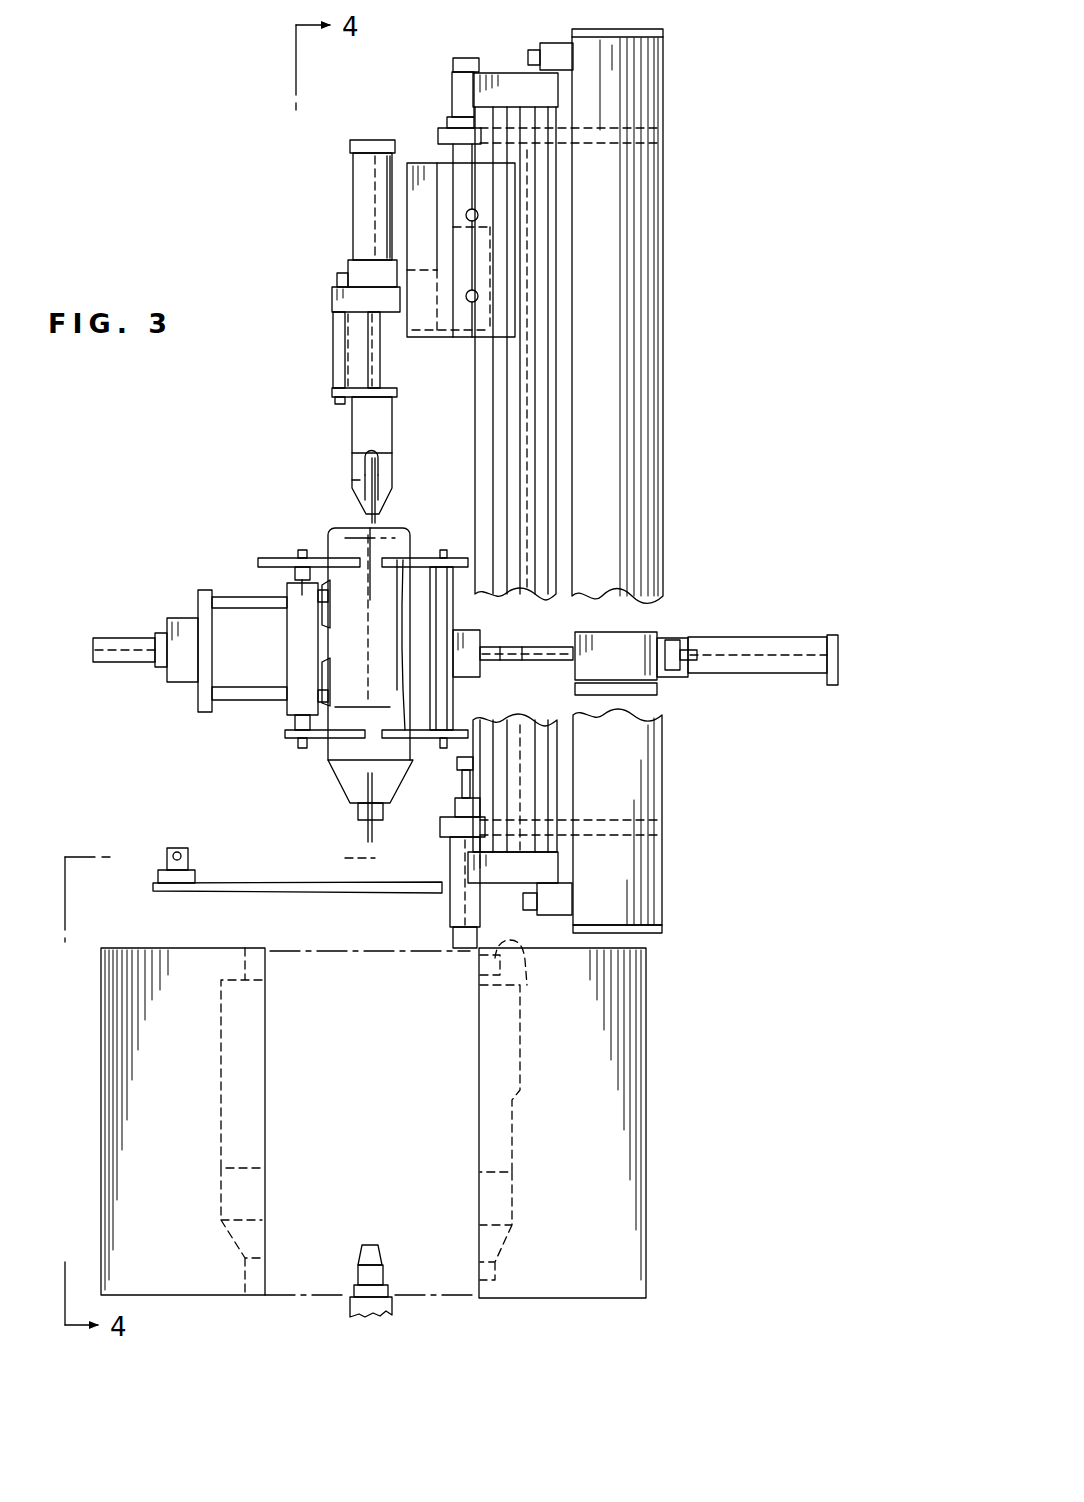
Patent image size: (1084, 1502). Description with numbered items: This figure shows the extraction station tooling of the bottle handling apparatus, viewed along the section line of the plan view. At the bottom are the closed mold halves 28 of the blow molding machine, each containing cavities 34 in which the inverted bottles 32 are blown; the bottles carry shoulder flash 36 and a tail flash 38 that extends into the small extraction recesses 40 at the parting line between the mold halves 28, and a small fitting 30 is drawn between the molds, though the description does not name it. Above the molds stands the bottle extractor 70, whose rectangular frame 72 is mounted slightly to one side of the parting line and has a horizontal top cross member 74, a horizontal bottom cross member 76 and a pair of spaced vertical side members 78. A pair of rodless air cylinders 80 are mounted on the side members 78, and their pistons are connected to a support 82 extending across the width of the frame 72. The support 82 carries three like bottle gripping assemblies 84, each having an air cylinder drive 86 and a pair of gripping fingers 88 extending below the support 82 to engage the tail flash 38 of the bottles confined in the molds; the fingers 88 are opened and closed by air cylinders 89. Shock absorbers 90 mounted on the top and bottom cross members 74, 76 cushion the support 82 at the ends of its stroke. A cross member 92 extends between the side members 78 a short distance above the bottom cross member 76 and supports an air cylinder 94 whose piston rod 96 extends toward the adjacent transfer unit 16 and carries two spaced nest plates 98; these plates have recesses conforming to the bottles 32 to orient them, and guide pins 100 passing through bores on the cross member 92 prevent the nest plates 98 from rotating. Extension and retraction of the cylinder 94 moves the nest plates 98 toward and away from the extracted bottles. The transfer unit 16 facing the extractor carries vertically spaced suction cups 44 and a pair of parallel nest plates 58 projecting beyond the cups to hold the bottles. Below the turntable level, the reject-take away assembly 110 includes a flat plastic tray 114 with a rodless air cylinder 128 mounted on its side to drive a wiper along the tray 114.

The transfer unit 16 is at (134, 630).
The mold halves 28 is at (170, 1283).
The sprue bushing 30 is at (383, 1270).
The bottles 32 is at (384, 656).
The cavities 34 is at (510, 1100).
The shoulder flash 36 is at (365, 832).
The tail flash 38 is at (358, 522).
The extraction recesses 40 is at (522, 960).
The suction cups 44 is at (325, 605).
The nest plates 58 is at (320, 548).
The bottle extractor 70 is at (690, 47).
The rectangular frame 72 is at (666, 96).
The top cross member 74 is at (663, 107).
The bottom cross member 76 is at (650, 896).
The side members 78 is at (650, 470).
The rodless air cylinders 80 is at (475, 420).
The support 82 is at (445, 170).
The bottle gripping assemblies 84 is at (332, 299).
The air cylinder drive 86 is at (350, 181).
The gripping fingers 88 is at (355, 475).
The air cylinders 89 is at (357, 430).
The shock absorbers 90 is at (452, 88).
The cross member 92 is at (665, 692).
The air cylinder 94 is at (737, 635).
The piston rod 96 is at (518, 650).
The nest plates 98 is at (403, 590).
The guide pins 100 is at (553, 660).
The reject-take away assembly 110 is at (266, 863).
The tray 114 is at (253, 893).
The rodless air cylinder 128 is at (152, 860).